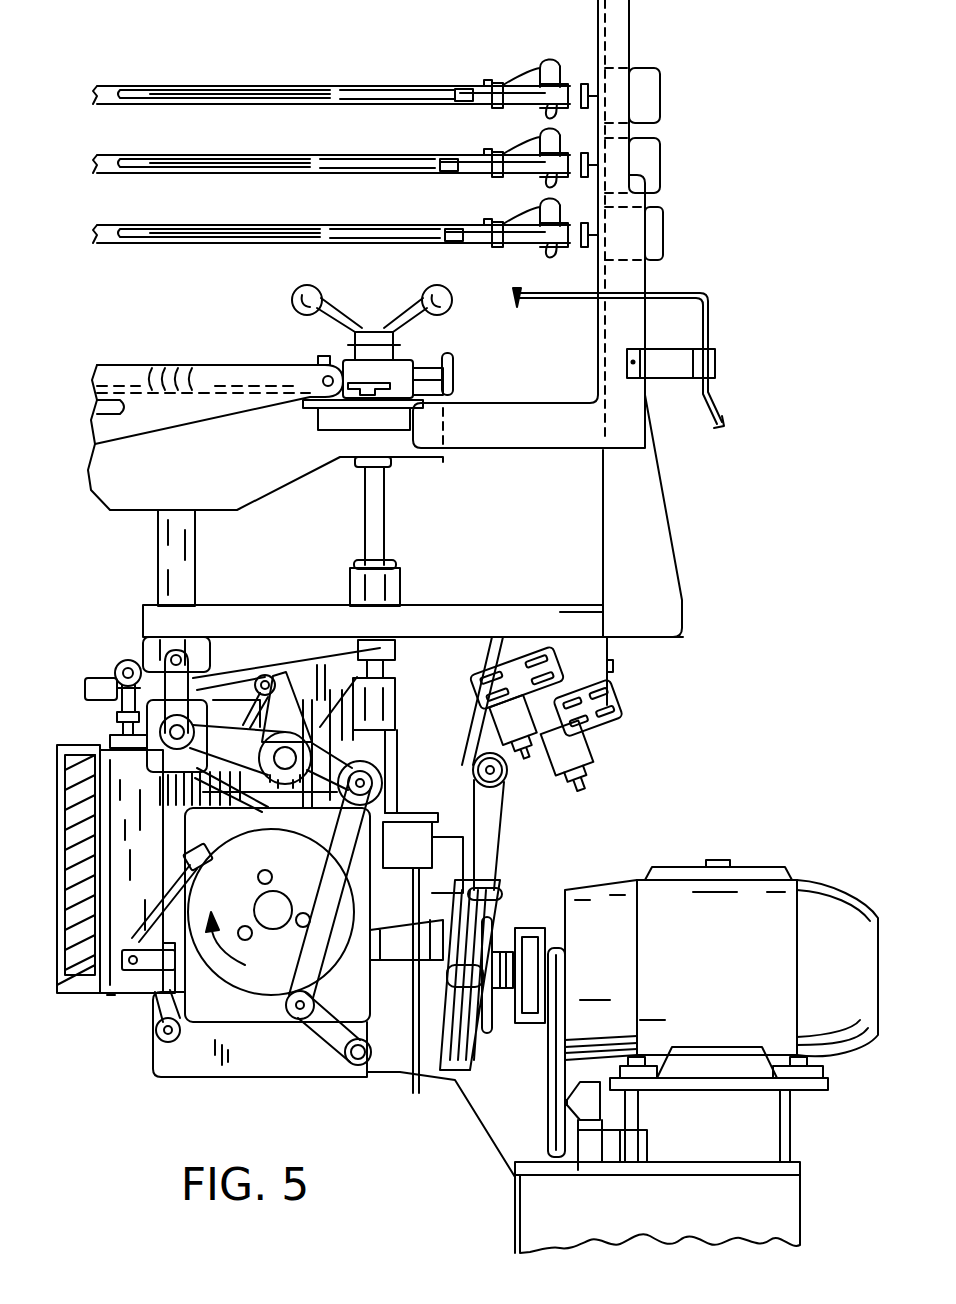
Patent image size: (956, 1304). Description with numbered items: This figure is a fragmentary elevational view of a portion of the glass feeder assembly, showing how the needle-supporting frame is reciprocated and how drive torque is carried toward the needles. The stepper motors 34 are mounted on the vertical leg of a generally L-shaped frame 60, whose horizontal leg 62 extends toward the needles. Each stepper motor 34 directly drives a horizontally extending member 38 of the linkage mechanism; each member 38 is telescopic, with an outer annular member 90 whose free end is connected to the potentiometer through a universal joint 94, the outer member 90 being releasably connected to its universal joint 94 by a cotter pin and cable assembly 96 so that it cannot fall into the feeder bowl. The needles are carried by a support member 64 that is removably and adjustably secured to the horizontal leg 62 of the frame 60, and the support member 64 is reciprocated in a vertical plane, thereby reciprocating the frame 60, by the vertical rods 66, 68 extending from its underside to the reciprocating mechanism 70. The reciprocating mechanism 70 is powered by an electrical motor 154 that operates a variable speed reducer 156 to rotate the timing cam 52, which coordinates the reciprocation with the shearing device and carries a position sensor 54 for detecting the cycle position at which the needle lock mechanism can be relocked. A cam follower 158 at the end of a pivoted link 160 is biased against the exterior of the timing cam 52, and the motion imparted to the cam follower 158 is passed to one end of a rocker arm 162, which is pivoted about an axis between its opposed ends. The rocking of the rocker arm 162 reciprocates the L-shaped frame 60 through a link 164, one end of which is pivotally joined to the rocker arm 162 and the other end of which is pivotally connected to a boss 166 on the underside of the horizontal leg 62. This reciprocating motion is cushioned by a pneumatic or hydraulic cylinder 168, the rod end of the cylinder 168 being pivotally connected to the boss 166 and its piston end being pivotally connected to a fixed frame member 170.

The stepper motor 34 is at (722, 169).
The horizontally extending member 38 is at (328, 227).
The timing cam 52 is at (235, 975).
The position sensor 54 is at (200, 850).
The L-shaped frame 60 is at (620, 337).
The horizontal leg 62 is at (490, 604).
The support member 64 is at (130, 365).
The vertical rod 66 is at (158, 550).
The vertical rod 68 is at (392, 516).
The reciprocating mechanism 70 is at (590, 842).
The outer annular member 90 is at (435, 163).
The universal joint 94 is at (556, 240).
The cotter pin and cable assembly 96 is at (494, 246).
The electrical motor 154 is at (815, 878).
The variable speed reducer 156 is at (272, 1015).
The cam follower 158 is at (330, 1057).
The pivoted link 160 is at (400, 1093).
The rocker arm 162 is at (390, 733).
The link 164 is at (155, 658).
The boss 166 is at (167, 660).
The cylinder 168 is at (115, 988).
The fixed frame member 170 is at (222, 1062).